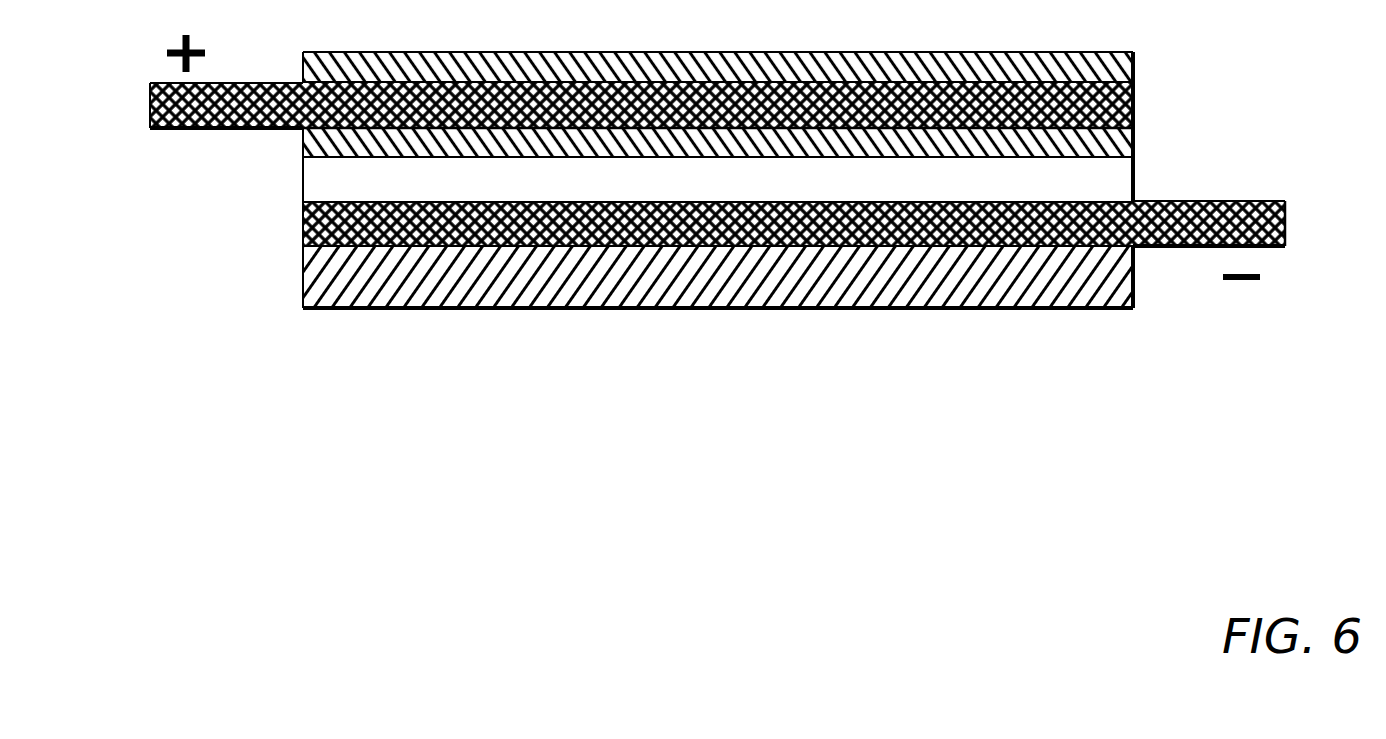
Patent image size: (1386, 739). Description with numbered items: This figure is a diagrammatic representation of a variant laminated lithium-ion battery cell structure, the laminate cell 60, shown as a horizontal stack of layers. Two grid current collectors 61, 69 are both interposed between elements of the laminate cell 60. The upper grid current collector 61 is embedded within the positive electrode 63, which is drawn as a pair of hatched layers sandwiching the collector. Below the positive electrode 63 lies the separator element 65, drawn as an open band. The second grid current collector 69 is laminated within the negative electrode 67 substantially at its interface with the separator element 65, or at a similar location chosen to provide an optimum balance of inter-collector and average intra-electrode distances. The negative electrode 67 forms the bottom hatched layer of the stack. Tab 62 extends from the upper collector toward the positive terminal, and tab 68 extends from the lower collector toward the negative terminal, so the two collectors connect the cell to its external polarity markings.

The laminate cell 60 is at (730, 262).
The grid current collector 61 is at (1137, 100).
The positive current collector tab 62 is at (148, 100).
The positive electrode 63 is at (1137, 70).
The separator element 65 is at (308, 174).
The negative electrode 67 is at (310, 283).
The negative current collector tab 68 is at (1287, 225).
The grid current collector 69 is at (302, 222).